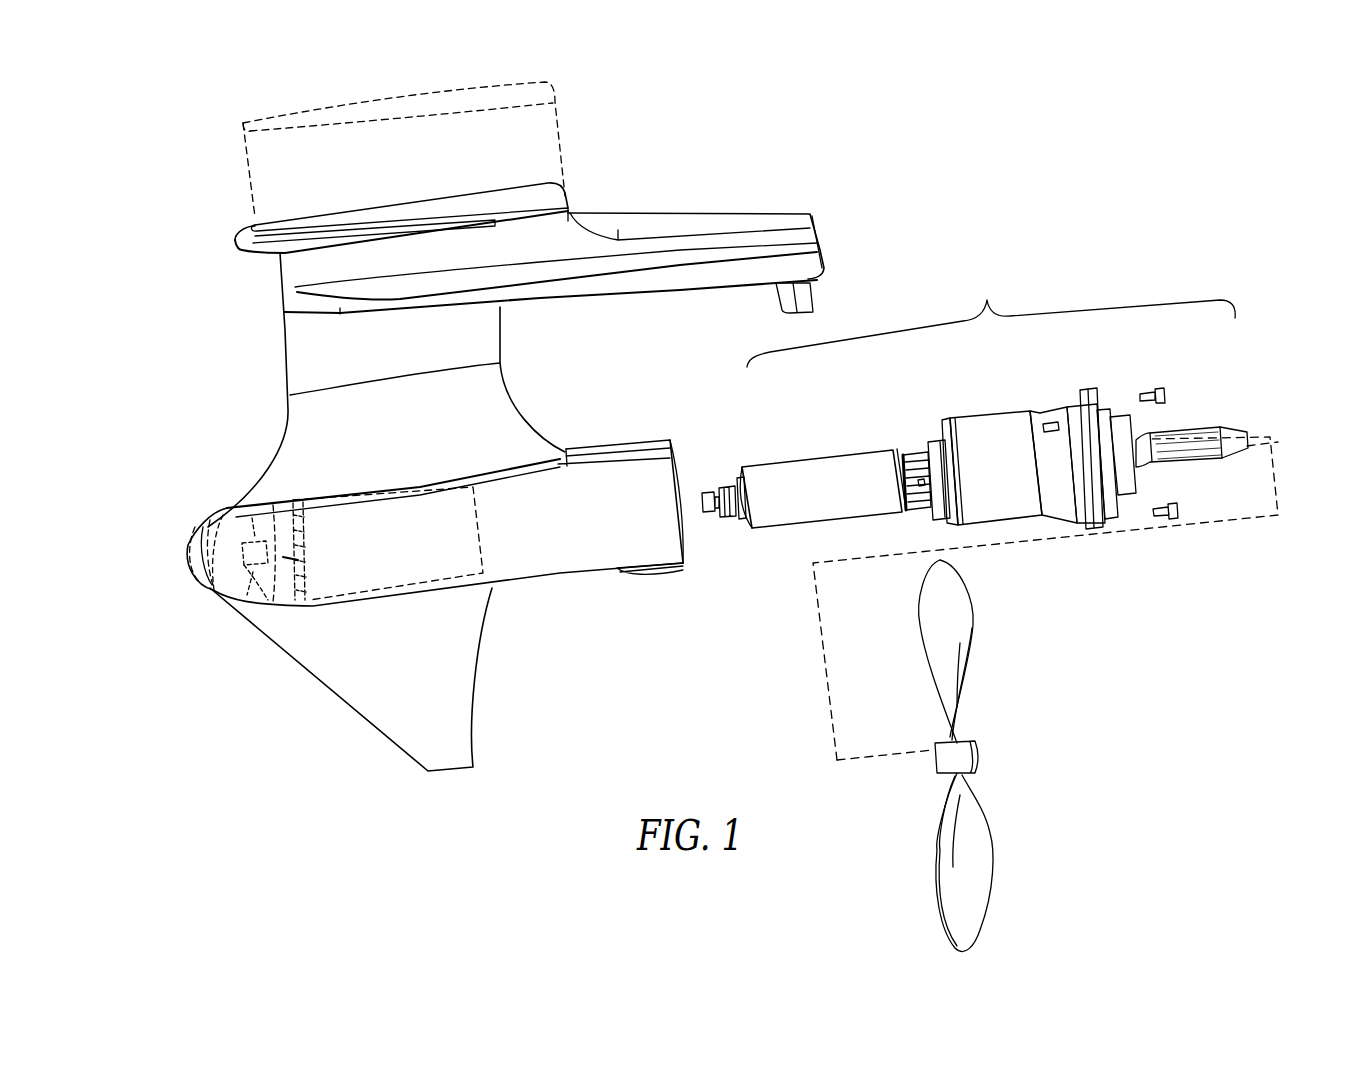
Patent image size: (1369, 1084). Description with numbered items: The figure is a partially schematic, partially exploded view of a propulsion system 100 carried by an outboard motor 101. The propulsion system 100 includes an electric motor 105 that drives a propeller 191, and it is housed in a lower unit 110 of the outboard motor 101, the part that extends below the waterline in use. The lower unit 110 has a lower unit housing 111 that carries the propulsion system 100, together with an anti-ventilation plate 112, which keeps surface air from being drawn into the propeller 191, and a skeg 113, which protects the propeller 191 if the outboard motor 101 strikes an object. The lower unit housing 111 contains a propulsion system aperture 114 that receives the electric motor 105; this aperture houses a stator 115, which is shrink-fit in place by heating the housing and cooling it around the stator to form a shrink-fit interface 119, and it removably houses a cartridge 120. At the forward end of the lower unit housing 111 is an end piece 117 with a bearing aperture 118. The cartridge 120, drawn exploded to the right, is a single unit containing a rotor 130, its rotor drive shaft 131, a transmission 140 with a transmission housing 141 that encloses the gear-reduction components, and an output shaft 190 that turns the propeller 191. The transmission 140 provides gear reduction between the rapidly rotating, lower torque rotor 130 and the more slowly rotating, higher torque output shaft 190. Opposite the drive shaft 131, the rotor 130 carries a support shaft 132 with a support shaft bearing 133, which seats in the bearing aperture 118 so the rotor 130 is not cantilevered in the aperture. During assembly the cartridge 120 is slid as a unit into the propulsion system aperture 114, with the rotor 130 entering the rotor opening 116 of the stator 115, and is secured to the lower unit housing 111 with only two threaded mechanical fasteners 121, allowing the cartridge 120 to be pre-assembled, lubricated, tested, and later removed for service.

The propulsion system 100 is at (236, 303).
The outboard motor 101 is at (588, 131).
The electric motor 105 is at (769, 547).
The lower unit 110 is at (706, 213).
The lower unit housing 111 is at (622, 447).
The anti-ventilation plate 112 is at (820, 266).
The skeg 113 is at (366, 722).
The propulsion system aperture 114 is at (686, 551).
The stator 115 is at (290, 590).
The rotor opening 116 is at (248, 565).
The end piece 117 is at (233, 525).
The bearing aperture 118 is at (243, 572).
The shrink-fit interface 119 is at (412, 592).
The cartridge 120 is at (991, 317).
The mechanical fasteners 121 is at (1145, 392).
The rotor 130 is at (815, 455).
The rotor drive shaft 131 is at (902, 456).
The support shaft 132 is at (744, 527).
The support shaft bearing 133 is at (724, 482).
The transmission 140 is at (998, 391).
The transmission housing 141 is at (970, 420).
The output shaft 190 is at (1180, 432).
The propeller 191 is at (972, 662).